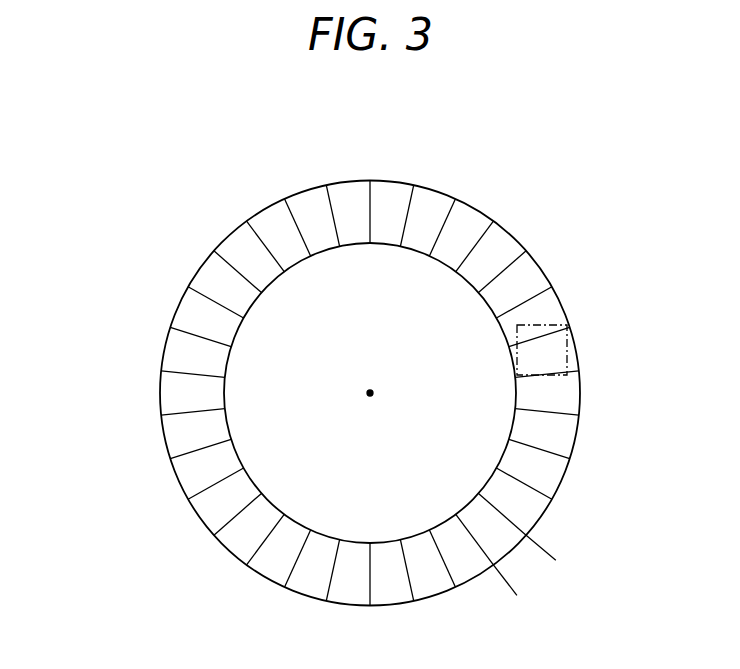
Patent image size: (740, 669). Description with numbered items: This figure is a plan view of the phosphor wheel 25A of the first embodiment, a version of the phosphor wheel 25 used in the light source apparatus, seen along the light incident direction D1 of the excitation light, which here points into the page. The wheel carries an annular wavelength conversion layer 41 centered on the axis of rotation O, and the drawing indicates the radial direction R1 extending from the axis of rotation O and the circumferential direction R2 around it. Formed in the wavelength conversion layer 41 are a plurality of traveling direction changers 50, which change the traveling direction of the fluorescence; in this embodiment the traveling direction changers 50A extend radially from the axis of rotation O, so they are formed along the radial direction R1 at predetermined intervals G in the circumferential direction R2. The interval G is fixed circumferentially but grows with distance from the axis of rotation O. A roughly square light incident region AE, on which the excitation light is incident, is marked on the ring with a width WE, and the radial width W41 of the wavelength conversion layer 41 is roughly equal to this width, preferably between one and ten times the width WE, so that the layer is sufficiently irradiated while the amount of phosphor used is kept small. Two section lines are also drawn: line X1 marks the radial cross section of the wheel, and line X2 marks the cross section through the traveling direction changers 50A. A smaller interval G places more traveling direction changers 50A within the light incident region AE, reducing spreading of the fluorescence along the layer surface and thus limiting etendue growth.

The phosphor wheel 25 is at (354, 343).
The phosphor wheel 25A is at (354, 343).
The traveling direction changers 50 is at (482, 193).
The traveling direction changers 50A is at (370, 212).
The wavelength conversion layer 41 is at (528, 278).
The line X1- X1 is at (370, 162).
The line X2- X2 is at (257, 250).
The light incident region AE is at (517, 350).
The width of the light incident region WE is at (542, 352).
The width of the wavelength conversion layer W41 is at (503, 454).
The predetermined interval G is at (546, 552).
The axis of rotation O is at (372, 394).
The radial direction R1 is at (367, 393).
The circumferential direction R2 is at (79, 360).
The light incident direction D1 is at (122, 542).